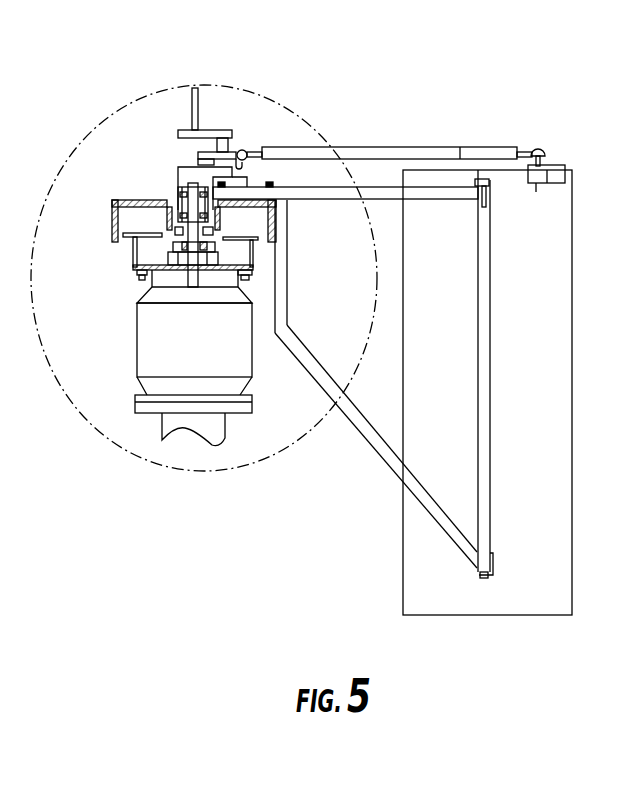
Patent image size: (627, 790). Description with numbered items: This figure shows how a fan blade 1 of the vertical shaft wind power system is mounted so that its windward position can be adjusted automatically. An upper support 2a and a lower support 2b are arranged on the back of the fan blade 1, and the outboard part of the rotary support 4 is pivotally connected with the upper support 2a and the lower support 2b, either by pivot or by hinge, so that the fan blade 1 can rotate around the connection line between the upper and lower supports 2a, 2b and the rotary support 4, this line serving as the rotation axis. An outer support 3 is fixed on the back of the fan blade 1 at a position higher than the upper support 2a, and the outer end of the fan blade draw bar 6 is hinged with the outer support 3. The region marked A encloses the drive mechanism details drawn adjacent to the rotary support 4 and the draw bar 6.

The detail region of drive mechanism A is at (78, 142).
The fan blade 1 is at (420, 402).
The upper support 2a is at (493, 192).
The lower support 2b is at (478, 572).
The outer support 3 is at (552, 165).
The rotary support 4 is at (377, 193).
The fan blade draw bar 6 is at (460, 150).